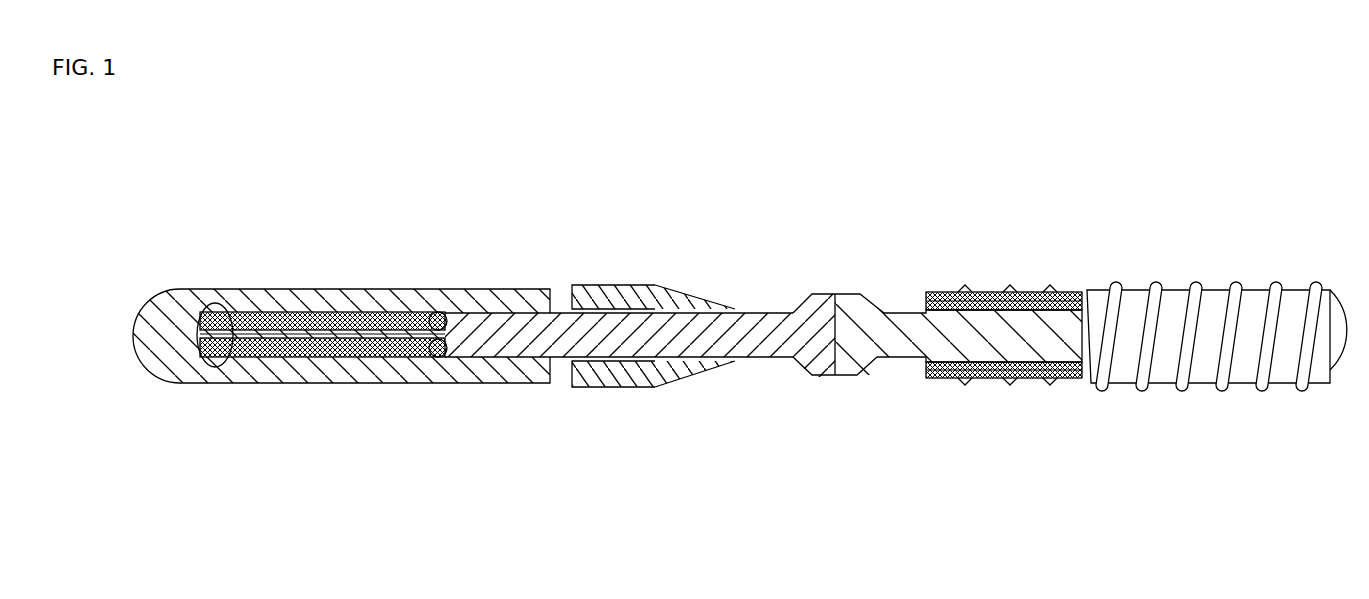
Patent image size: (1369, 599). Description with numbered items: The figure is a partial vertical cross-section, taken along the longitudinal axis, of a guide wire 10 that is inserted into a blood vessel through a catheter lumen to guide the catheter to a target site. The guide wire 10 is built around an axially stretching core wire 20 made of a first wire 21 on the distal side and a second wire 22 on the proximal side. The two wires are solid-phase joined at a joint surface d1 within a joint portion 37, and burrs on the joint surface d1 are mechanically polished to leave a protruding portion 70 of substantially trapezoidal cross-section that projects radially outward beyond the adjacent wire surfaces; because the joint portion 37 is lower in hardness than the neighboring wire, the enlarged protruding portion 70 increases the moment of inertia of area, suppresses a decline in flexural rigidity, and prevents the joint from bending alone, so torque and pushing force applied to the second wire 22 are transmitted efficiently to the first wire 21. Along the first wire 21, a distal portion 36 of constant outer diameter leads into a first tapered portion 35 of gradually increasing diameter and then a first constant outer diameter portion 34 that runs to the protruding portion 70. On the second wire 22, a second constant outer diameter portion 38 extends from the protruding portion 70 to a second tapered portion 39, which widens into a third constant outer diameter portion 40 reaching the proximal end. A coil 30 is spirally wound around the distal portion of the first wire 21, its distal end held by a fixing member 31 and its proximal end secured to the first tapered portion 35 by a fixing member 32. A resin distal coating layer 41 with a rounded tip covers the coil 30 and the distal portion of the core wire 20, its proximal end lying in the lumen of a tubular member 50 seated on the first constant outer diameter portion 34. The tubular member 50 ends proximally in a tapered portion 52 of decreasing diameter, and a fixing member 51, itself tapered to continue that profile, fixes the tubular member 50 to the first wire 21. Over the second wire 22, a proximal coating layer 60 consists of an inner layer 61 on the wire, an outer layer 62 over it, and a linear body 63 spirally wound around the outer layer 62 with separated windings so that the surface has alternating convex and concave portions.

The guide wire 10 is at (1118, 181).
The core wire 20 is at (523, 193).
The first wire 21 is at (542, 313).
The second wire 22 is at (900, 325).
The coil 30 is at (362, 313).
The fixing member 31 is at (217, 303).
The fixing member 32 is at (436, 312).
The first constant outer diameter portion 34 is at (792, 370).
The first tapered portion 35 is at (522, 357).
The distal portion 36 is at (198, 289).
The joint portion 37 is at (878, 360).
The second constant outer diameter portion 38 is at (912, 360).
The second tapered portion 39 is at (912, 505).
The third constant outer diameter portion 40 is at (978, 380).
The distal coating layer 41 is at (291, 289).
The tubular member 50 is at (625, 286).
The fixing member 51 is at (700, 305).
The tapered portion 52 is at (664, 290).
The proximal coating layer 60 is at (962, 222).
The inner layer 61 is at (978, 292).
The outer layer 62 is at (1045, 292).
The linear body 63 is at (1013, 292).
The protruding portion 70 is at (832, 292).
The joint surface d1 is at (835, 377).